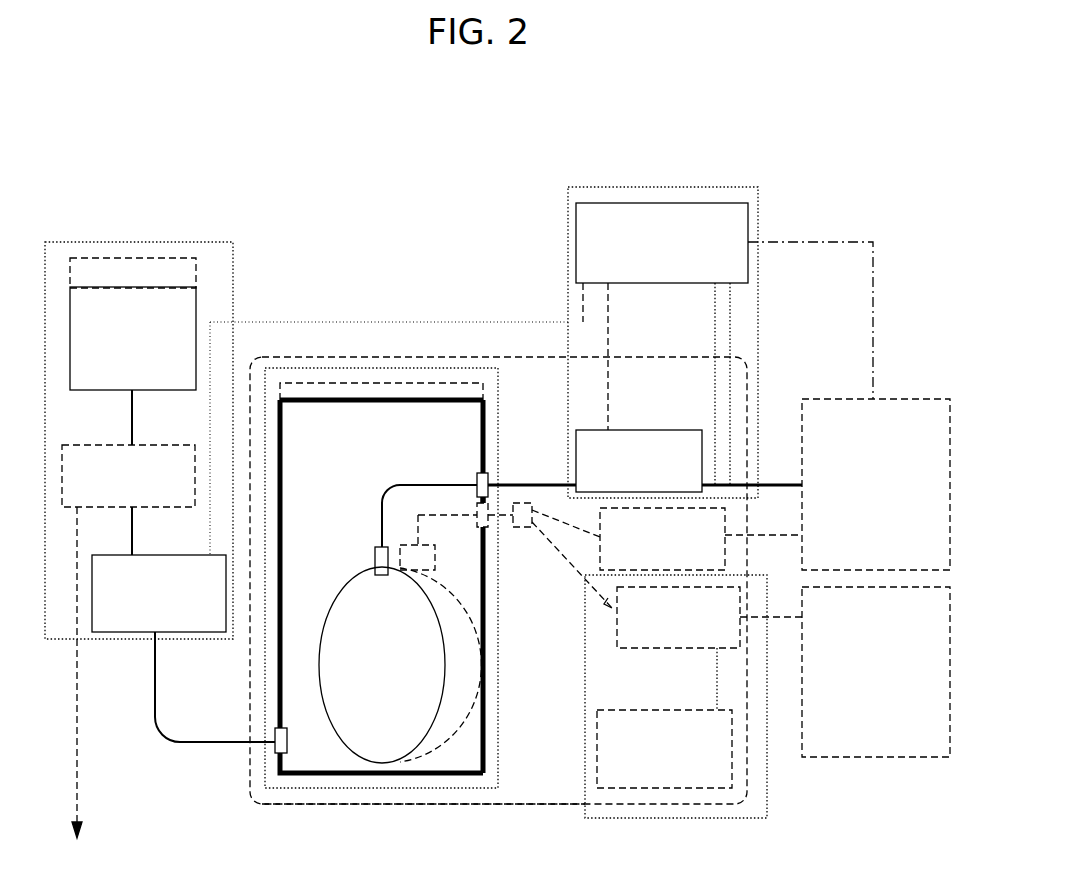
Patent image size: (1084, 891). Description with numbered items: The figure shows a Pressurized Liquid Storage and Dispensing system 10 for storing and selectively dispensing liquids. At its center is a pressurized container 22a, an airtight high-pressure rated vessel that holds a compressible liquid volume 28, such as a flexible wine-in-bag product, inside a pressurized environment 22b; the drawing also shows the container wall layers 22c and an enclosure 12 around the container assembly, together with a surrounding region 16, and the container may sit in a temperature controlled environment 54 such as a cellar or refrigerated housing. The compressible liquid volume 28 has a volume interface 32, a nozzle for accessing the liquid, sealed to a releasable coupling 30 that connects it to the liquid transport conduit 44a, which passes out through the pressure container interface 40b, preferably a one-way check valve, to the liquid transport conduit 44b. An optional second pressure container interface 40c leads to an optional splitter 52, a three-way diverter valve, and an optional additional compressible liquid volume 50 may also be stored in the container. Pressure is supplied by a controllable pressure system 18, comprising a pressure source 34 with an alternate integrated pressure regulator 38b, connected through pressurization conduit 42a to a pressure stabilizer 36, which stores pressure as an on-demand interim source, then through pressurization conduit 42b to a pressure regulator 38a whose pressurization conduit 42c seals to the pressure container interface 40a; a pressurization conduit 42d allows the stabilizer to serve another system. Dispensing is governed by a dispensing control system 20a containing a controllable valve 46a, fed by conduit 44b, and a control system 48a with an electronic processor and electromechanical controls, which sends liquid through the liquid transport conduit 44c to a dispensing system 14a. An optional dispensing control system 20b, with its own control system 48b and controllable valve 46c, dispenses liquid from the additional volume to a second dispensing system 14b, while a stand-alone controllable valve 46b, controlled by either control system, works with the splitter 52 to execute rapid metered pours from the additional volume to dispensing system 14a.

The Pressurized Liquid Storage and Dispensing (PLSD) system 10 is at (742, 118).
The housing 12 is at (405, 368).
The dispensing system 14a is at (887, 398).
The dispensing system 14b is at (832, 758).
The pressurizing assembly 16 is at (498, 645).
The controllable pressure system 18 is at (233, 305).
The dispensing control system 20a is at (758, 213).
The dispensing control system 20b is at (768, 805).
The pressurized container 22a is at (484, 415).
The pressurized environment 22b is at (465, 400).
The container wall layer 22c is at (305, 383).
The compressible liquid volume 28 is at (343, 583).
The releasable coupling 30 is at (380, 546).
The volume interface 32 is at (372, 558).
The pressure source 34 is at (197, 298).
The pressure stabilizer 36 is at (115, 443).
The pressure regulator 38a is at (178, 635).
The pressure regulator 38b is at (133, 255).
The pressure container interface 40a is at (275, 747).
The pressure container interface 40b is at (488, 480).
The pressure container interface 40c is at (488, 527).
The pressurization conduit 42a is at (133, 405).
The pressurization conduit 42b is at (133, 512).
The pressurization conduit 42c is at (200, 743).
The pressurization conduit 42d is at (80, 790).
The liquid transport conduit 44a is at (393, 495).
The liquid transport conduit 44b is at (507, 482).
The liquid transport conduit 44c is at (770, 483).
The controllable valve 46a is at (626, 430).
The stand-alone controllable valve 46b is at (725, 527).
The controllable valve 46c is at (697, 648).
The control system 48a is at (620, 283).
The control system 48b is at (660, 790).
The additional compressible liquid volume 50 is at (450, 742).
The splitter 52 is at (522, 527).
The temperature controlled environment 54 is at (312, 806).